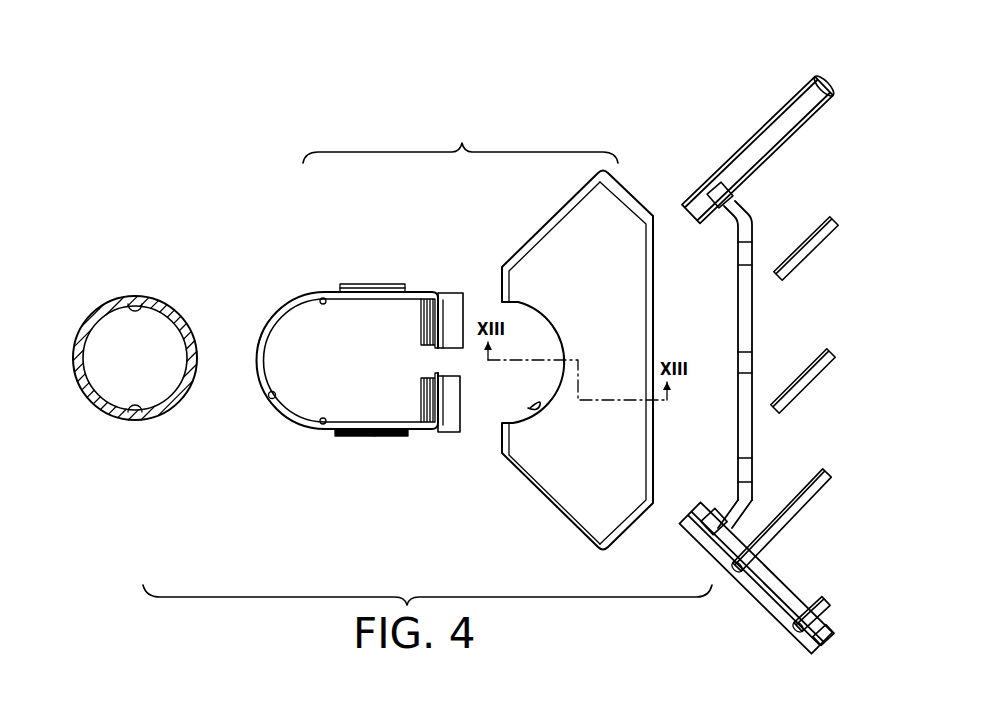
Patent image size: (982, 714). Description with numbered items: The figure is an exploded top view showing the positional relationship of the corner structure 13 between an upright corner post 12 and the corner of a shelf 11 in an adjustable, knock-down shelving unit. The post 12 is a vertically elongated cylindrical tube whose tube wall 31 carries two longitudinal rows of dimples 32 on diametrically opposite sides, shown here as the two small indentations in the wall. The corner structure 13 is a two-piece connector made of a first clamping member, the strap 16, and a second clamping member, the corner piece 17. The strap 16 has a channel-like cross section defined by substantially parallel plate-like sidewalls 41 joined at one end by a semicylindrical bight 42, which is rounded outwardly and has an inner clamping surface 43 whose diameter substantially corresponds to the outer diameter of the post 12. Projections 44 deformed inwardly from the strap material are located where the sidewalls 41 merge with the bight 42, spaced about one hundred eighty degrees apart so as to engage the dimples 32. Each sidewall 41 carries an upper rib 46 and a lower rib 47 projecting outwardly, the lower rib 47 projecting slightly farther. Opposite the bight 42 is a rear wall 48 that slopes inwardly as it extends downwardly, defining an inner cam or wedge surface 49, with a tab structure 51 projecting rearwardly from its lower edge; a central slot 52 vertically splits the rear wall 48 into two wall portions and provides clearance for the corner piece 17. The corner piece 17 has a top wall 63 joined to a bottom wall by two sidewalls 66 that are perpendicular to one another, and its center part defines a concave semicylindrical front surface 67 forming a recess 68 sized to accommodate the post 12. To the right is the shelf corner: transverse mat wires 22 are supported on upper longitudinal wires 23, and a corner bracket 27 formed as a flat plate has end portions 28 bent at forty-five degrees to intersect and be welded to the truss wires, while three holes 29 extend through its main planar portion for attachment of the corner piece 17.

The shelf 11 is at (825, 58).
The corner post 12 is at (98, 306).
The corner structure 13 is at (460, 138).
The strap 16 is at (298, 290).
The corner piece 17 is at (553, 207).
The mat wires 22 is at (802, 252).
The upper longitudinal wires 23 is at (787, 118).
The corner bracket 27 is at (742, 445).
The end portions 28 is at (733, 200).
The holes 29 is at (748, 243).
The tube wall 31 is at (95, 396).
The dimples 32 is at (137, 302).
The sidewalls 41 is at (394, 300).
The bight 42 is at (265, 331).
The inner clamping surface 43 is at (276, 398).
The projections 44 is at (325, 306).
The upper rib 46 is at (398, 438).
The lower rib 47 is at (356, 438).
The rear wall 48 is at (440, 316).
The cam or wedge surface 49 is at (420, 399).
The tab structure 51 is at (452, 416).
The central slot 52 is at (445, 362).
The top wall 63 is at (603, 363).
The sidewalls 66 is at (530, 245).
The front vertical surface 67 is at (540, 409).
The semicylindrical recess 68 is at (518, 387).